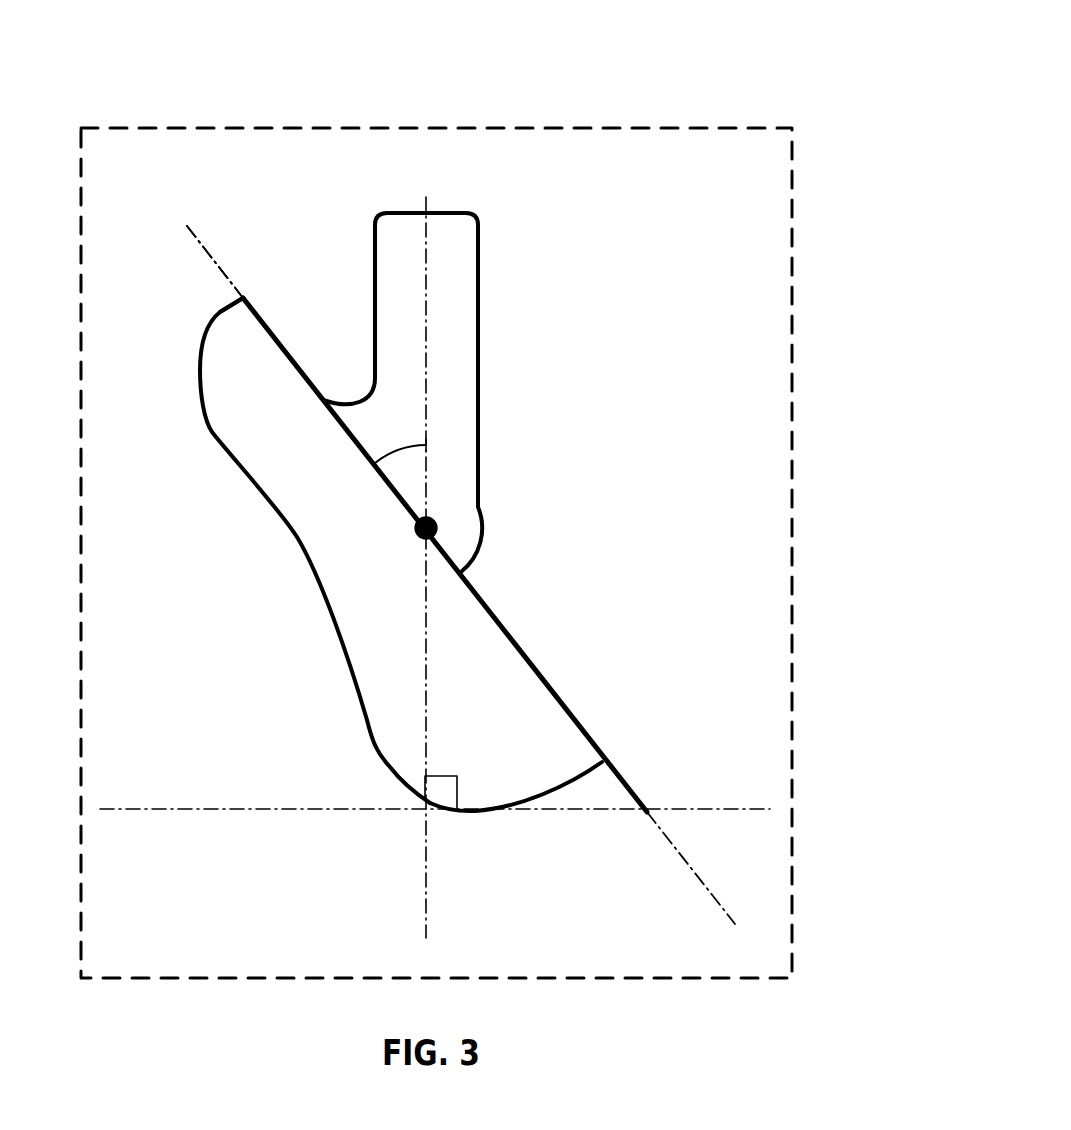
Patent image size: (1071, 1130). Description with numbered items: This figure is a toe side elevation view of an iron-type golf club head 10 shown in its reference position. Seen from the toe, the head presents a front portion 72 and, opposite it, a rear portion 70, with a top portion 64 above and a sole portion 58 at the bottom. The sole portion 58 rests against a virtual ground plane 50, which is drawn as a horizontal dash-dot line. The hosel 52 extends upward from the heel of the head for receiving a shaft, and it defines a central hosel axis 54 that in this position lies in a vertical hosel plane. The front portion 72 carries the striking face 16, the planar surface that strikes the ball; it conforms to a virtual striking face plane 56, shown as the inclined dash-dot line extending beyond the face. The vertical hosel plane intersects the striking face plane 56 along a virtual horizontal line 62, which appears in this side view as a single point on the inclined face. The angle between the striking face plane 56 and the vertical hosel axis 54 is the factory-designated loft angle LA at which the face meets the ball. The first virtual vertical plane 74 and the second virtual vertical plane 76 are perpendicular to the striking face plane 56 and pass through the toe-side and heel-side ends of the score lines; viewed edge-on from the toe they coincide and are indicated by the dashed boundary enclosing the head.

The golf club head 10 is at (290, 100).
The striking face 16 is at (586, 716).
The virtual ground plane 50 is at (318, 812).
The hosel 52 is at (516, 378).
The hosel axis 54 is at (496, 565).
The virtual striking face plane 56 is at (227, 277).
The sole portion 58 is at (545, 812).
The virtual horizontal line 62 is at (434, 517).
The top portion 64 is at (220, 310).
The rear portion 70 is at (262, 549).
The front portion 72 is at (682, 442).
The first virtual vertical plane 74 is at (436, 517).
The second virtual vertical plane 76 is at (663, 127).
The loft angle LA is at (388, 436).